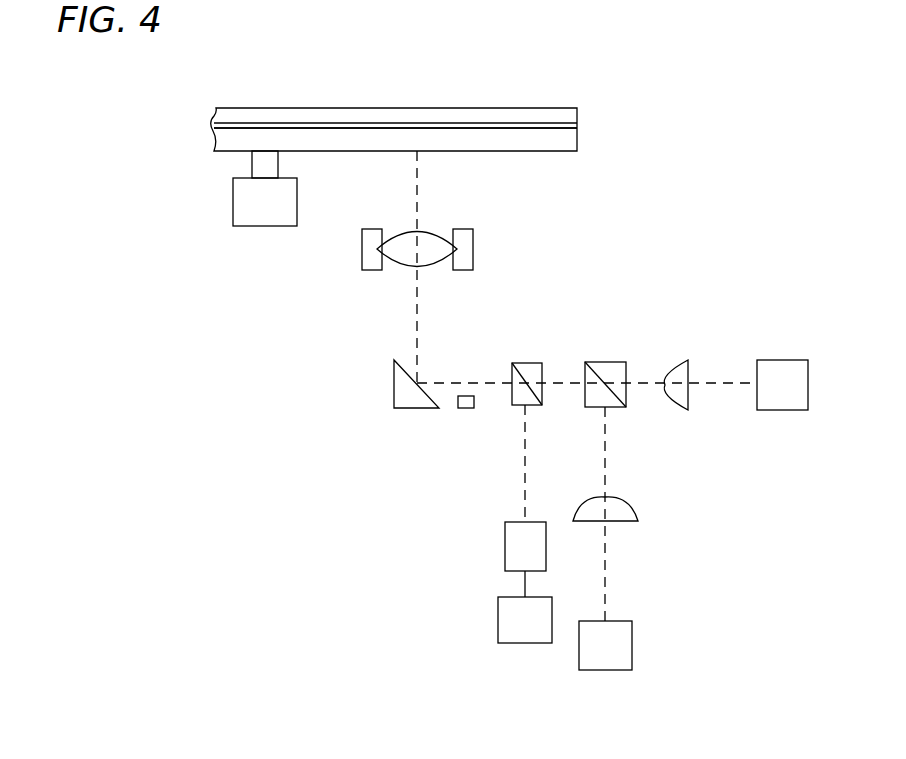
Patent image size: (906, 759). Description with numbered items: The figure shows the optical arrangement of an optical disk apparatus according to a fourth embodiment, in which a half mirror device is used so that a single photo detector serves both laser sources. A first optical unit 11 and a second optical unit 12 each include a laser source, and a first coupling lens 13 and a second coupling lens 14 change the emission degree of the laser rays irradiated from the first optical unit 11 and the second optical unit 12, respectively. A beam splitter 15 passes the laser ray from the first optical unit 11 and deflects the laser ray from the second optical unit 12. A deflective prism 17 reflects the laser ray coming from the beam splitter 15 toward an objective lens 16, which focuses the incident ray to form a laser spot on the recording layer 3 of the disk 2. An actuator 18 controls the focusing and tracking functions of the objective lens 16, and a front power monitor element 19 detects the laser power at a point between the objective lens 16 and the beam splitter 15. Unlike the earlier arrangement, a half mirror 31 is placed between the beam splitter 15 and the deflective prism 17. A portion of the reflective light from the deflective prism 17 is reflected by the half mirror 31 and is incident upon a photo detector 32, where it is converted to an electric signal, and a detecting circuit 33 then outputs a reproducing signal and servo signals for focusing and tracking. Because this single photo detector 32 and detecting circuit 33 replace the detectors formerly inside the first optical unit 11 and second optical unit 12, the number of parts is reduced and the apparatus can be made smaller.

The disk 2 is at (583, 110).
The recording layer 3 is at (557, 127).
The first optical unit 11 is at (797, 377).
The second optical unit 12 is at (630, 645).
The first coupling lens 13 is at (685, 368).
The second coupling lens 14 is at (617, 515).
The beam splitter 15 is at (608, 370).
The objective lens 16 is at (400, 257).
The deflective prism 17 is at (412, 397).
The actuator 18 is at (467, 248).
The front power monitor element 19 is at (462, 412).
The half mirror 31 is at (533, 367).
The photo detector 32 is at (517, 547).
The detecting circuit 33 is at (518, 620).